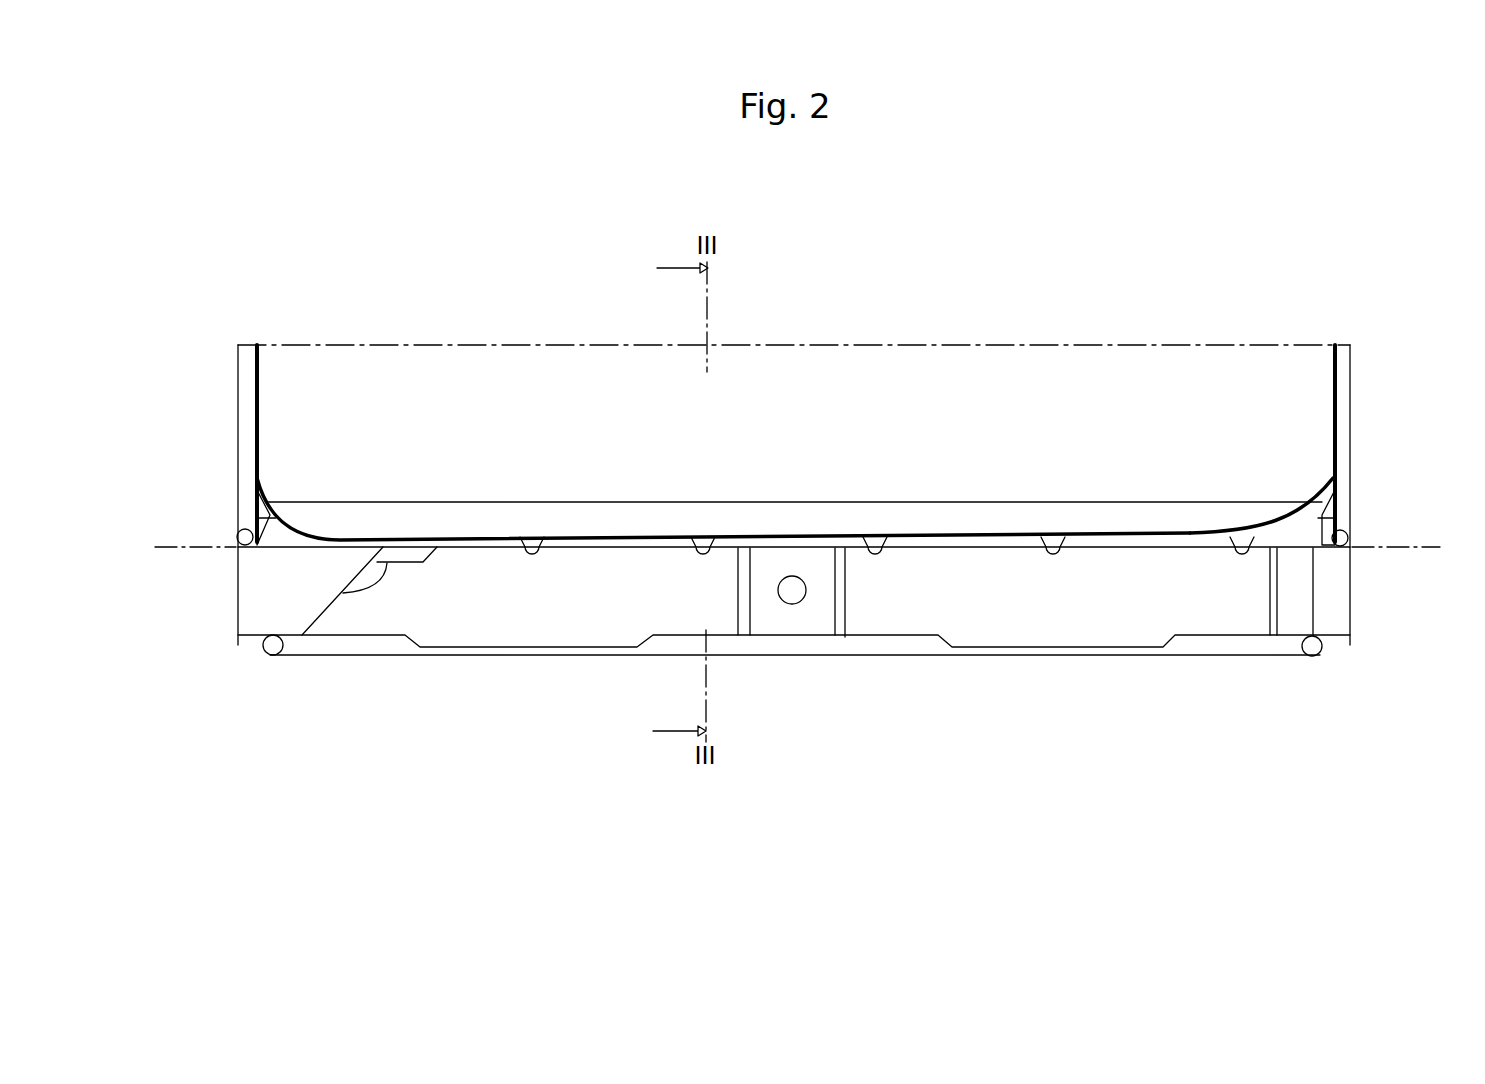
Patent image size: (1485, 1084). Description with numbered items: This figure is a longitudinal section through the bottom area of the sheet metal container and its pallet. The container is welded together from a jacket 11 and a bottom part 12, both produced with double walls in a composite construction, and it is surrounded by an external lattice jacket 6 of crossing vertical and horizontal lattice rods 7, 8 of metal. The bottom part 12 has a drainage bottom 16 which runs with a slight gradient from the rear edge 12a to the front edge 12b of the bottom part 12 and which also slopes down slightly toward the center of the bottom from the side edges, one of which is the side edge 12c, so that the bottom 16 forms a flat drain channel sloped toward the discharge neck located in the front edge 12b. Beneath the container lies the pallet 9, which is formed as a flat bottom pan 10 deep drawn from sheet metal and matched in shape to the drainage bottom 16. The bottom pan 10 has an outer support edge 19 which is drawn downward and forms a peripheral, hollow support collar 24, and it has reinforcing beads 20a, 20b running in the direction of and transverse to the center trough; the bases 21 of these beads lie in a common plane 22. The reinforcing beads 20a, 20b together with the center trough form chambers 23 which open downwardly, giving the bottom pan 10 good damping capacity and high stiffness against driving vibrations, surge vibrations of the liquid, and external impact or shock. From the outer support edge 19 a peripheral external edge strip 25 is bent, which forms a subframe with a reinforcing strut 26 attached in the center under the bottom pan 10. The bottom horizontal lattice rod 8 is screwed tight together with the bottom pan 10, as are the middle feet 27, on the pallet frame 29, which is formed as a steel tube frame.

The external lattice jacket 6 is at (245, 377).
The vertical lattice rod 7 is at (1340, 373).
The horizontal lattice rod 8 is at (238, 550).
The pallet 9 is at (1358, 608).
The bottom pan 10 is at (290, 541).
The jacket 11 is at (488, 375).
The bottom part 12 is at (740, 513).
The rear edge 12a is at (1340, 506).
The front edge 12b is at (254, 517).
The side edge 12c is at (1045, 515).
The drainage bottom 16 is at (565, 535).
The outer support edge 19 is at (252, 495).
The reinforcing bead 20a is at (455, 539).
The reinforcing bead 20b is at (528, 547).
The bead base 21 is at (643, 549).
The common plane 22 is at (797, 548).
The chamber 23 is at (1000, 541).
The support collar 24 is at (272, 541).
The external edge strip 25 is at (1349, 538).
The reinforcing strut 26 is at (800, 545).
The middle foot 27 is at (267, 656).
The pallet frame 29 is at (352, 645).